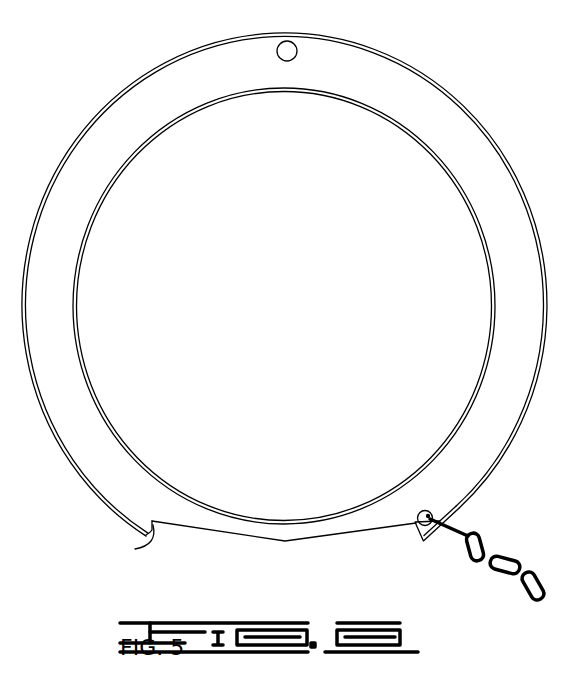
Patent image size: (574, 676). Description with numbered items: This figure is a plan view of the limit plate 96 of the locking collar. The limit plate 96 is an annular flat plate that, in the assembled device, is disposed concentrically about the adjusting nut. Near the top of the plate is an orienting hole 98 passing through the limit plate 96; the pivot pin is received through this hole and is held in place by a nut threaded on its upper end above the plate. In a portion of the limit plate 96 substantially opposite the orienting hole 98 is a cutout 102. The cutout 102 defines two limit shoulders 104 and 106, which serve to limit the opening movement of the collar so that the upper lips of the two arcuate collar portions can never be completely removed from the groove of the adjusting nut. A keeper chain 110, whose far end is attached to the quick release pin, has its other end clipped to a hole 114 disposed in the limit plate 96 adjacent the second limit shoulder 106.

The limit plate 96 is at (512, 118).
The orienting hole 98 is at (282, 61).
The cutout 102 is at (212, 549).
The limit shoulder 104 is at (135, 549).
The limit shoulder 106 is at (414, 526).
The keeper chain 110 is at (507, 557).
The hole 114 is at (432, 511).